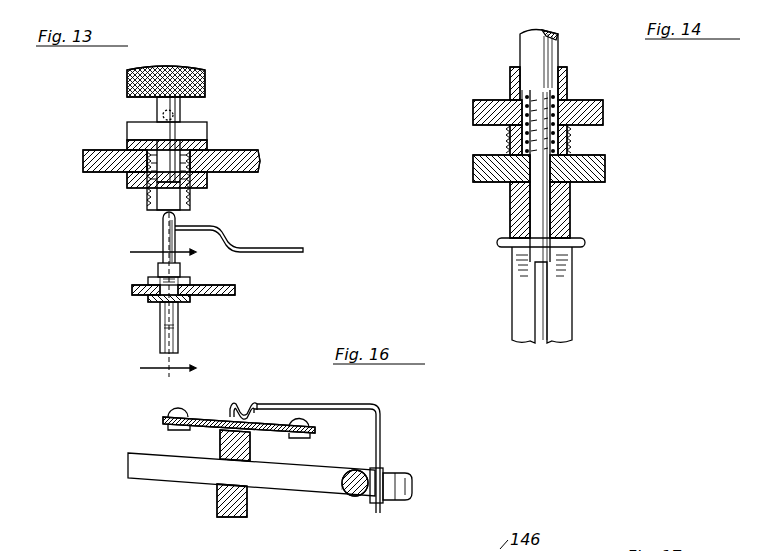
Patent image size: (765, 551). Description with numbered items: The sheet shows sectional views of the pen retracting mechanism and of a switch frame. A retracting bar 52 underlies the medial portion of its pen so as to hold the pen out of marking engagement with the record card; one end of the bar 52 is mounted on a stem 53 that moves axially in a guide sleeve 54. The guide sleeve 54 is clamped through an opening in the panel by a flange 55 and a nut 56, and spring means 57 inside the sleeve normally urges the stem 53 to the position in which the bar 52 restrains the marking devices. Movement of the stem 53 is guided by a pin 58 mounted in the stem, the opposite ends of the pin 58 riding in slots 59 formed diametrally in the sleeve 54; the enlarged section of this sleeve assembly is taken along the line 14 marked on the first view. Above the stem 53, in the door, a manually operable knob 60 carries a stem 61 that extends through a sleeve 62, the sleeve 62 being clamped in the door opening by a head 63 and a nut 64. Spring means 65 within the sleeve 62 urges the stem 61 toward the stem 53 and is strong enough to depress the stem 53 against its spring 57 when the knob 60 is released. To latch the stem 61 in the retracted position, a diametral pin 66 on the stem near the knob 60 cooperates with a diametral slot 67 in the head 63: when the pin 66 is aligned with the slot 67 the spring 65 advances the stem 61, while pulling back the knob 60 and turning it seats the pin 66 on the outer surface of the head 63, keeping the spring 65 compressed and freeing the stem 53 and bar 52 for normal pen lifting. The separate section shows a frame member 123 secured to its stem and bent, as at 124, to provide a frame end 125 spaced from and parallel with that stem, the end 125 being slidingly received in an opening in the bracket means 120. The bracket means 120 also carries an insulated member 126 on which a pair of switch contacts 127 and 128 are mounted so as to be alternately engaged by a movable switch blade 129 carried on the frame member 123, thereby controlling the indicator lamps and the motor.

In FIG. 13, the section line 14— 14 is at (161, 297).
In FIG. 13, the retracting bar 52 is at (285, 248).
In FIG. 13, the stem 53 is at (163, 222).
In FIG. 14, the stem 53 is at (530, 43).
In FIG. 13, the guide sleeve 54 is at (160, 315).
In FIG. 14, the guide sleeve 54 is at (510, 212).
In FIG. 13, the flange 55 is at (190, 281).
In FIG. 14, the flange 55 is at (473, 112).
In FIG. 13, the nut 56 is at (190, 299).
In FIG. 14, the nut 56 is at (473, 170).
In FIG. 14, the spring means 57 is at (560, 100).
In FIG. 14, the pin 58 is at (500, 247).
In FIG. 13, the slots 59 is at (173, 334).
In FIG. 14, the slots 59 is at (566, 283).
In FIG. 13, the manually operable knob 60 is at (205, 82).
In FIG. 13, the stem 61 is at (168, 196).
In FIG. 13, the sleeve 62 is at (140, 165).
In FIG. 13, the head 63 is at (207, 142).
In FIG. 13, the nut 64 is at (207, 181).
In FIG. 13, the spring means 65 is at (222, 155).
In FIG. 13, the pin 66 is at (173, 115).
In FIG. 13, the diametral slot 67 is at (127, 131).
In FIG. 16, the bracket means 120 is at (232, 517).
In FIG. 16, the frame member 123 is at (352, 496).
In FIG. 16, the bend 124 is at (358, 470).
In FIG. 16, the frame end 125 is at (168, 482).
In FIG. 16, the insulated member 126 is at (210, 417).
In FIG. 16, the switch contact 127 is at (168, 412).
In FIG. 16, the switch contact 128 is at (296, 416).
In FIG. 16, the switch blade 129 is at (356, 407).